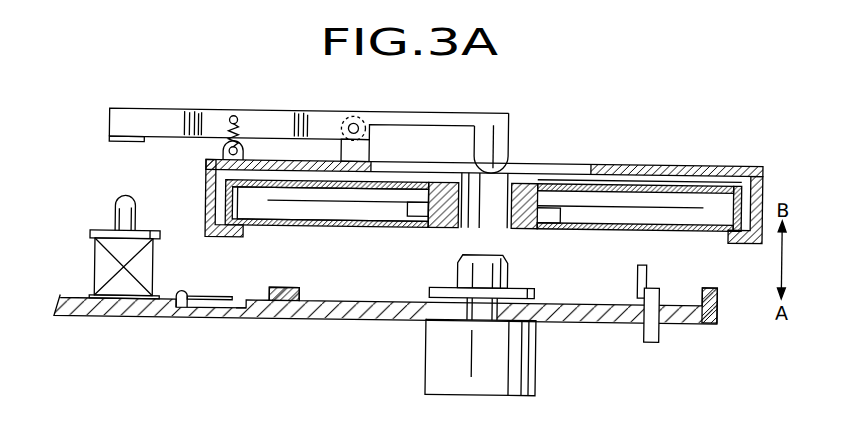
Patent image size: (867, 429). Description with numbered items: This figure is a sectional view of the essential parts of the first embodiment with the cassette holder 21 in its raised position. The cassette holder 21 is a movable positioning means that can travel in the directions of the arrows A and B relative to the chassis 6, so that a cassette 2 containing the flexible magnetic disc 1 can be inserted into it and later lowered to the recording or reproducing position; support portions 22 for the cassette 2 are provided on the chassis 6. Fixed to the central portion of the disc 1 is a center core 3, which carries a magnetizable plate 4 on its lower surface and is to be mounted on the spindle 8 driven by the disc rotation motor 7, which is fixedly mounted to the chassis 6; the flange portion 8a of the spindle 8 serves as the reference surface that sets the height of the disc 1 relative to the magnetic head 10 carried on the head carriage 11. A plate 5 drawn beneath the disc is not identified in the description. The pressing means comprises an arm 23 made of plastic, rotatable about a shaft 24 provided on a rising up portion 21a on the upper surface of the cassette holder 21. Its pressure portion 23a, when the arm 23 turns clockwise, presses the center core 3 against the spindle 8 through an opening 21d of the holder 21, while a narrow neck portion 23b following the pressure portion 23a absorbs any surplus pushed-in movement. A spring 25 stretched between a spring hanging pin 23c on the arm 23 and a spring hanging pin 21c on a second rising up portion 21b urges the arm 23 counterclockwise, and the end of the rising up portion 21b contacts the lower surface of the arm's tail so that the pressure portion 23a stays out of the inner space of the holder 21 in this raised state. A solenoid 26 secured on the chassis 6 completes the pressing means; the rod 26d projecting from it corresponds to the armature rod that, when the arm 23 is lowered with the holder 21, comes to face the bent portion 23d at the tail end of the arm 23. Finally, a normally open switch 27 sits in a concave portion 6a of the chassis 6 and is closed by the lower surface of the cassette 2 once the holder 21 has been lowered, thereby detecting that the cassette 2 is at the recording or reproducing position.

The flexible magnetic disc 1 is at (337, 205).
The cassette 2 is at (260, 230).
The center core 3 is at (528, 179).
The magnetizable plate 4 is at (416, 236).
The bottom plate 5 is at (677, 229).
The chassis 6 is at (385, 321).
The concave portion 6a is at (240, 313).
The disc rotation motor 7 is at (522, 359).
The spindle 8 is at (458, 281).
The flange portion 8a is at (517, 291).
The magnetic head 10 is at (637, 275).
The head carriage 11 is at (651, 340).
The cassette holder 21 is at (717, 169).
The rising up portion 21a is at (364, 149).
The rising up portion 21b is at (249, 150).
The spring hanging pin 21c is at (227, 150).
The opening 21d is at (516, 166).
The support portions 22 is at (290, 292).
The arm 23 is at (321, 124).
The pressure portion 23a is at (490, 163).
The narrow neck portion 23b is at (408, 119).
The spring hanging pin 23c is at (231, 118).
The bent portion 23d is at (132, 150).
The shaft 24 is at (352, 124).
The spring 25 is at (240, 131).
The solenoid 26 is at (98, 275).
The solenoid plunger 26d is at (118, 223).
The switch 27 is at (185, 297).